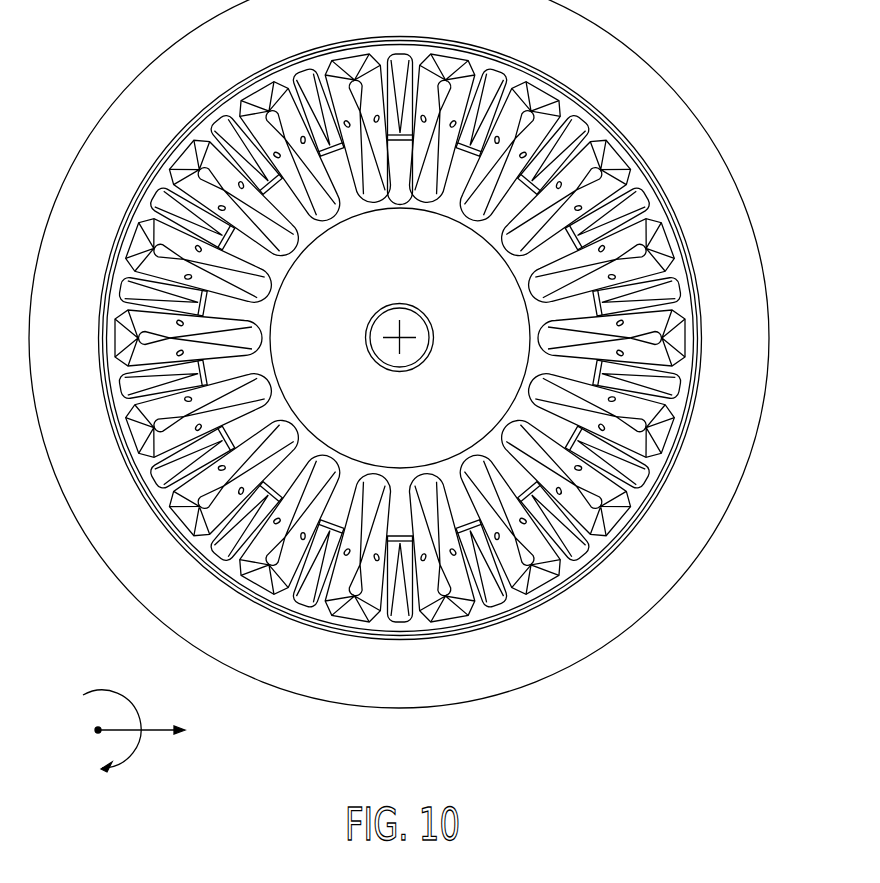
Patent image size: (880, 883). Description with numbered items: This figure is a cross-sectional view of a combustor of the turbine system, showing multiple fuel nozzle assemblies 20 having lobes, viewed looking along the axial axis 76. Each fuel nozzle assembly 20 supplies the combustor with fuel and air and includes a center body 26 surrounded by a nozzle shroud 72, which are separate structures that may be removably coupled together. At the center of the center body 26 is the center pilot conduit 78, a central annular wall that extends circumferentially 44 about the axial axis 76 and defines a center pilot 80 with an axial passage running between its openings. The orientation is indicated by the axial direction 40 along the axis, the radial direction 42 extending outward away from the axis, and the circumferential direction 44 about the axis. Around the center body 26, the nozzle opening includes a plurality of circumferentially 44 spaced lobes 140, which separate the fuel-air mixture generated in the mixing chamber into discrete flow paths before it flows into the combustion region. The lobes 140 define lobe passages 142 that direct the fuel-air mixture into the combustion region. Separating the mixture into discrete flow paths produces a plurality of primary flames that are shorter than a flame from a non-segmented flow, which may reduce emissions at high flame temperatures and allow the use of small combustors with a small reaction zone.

The fuel nozzle assembly 20 is at (140, 43).
The center body 26 is at (345, 302).
The axial direction 40 is at (96, 733).
The radial direction 42 is at (148, 732).
The circumferential direction 44 is at (115, 693).
The nozzle shroud 72 is at (158, 180).
The axial axis 76 is at (390, 325).
The center pilot conduit 78 is at (218, 233).
The center pilot 80 is at (426, 313).
The lobes 140 is at (173, 153).
The lobe passages 142 is at (222, 128).